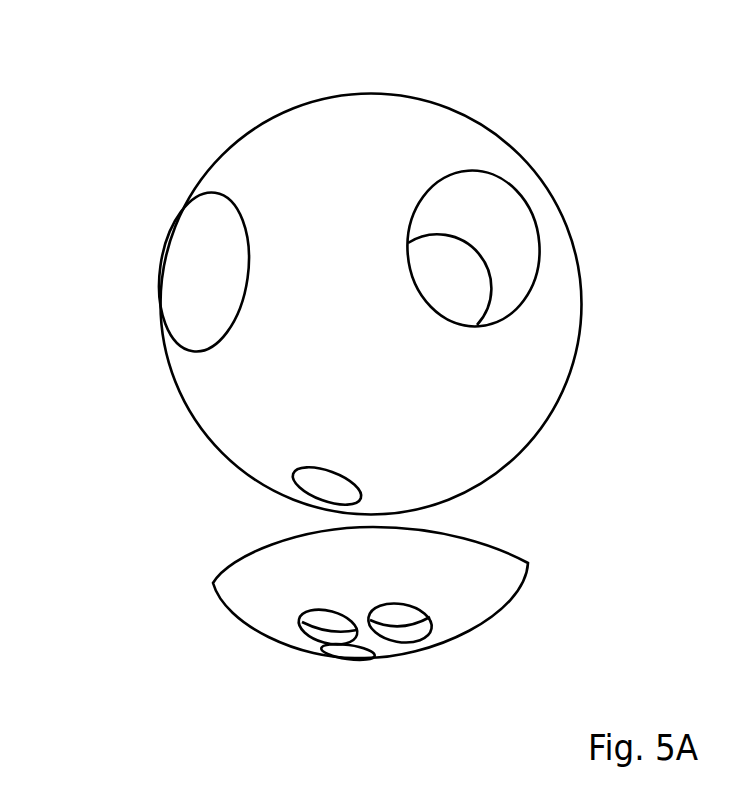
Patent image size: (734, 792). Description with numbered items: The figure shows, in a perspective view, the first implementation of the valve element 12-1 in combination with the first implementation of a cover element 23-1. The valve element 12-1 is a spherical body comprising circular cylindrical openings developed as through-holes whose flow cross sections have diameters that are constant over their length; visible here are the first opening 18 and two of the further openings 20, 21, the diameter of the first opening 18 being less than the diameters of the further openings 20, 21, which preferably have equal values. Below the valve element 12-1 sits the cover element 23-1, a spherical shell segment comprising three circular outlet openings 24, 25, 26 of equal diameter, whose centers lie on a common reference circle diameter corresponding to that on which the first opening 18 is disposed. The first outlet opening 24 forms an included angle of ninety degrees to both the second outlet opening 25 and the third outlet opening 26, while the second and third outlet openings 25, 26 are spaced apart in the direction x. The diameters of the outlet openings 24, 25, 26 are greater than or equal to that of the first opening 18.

The valve element 12-1 is at (546, 85).
The first opening 18 is at (322, 492).
The opening 20 is at (508, 275).
The opening 21 is at (180, 280).
The cover element 23-1 is at (487, 592).
The first outlet opening 24 is at (322, 632).
The second outlet opening 25 is at (410, 627).
The third outlet opening 26 is at (352, 655).